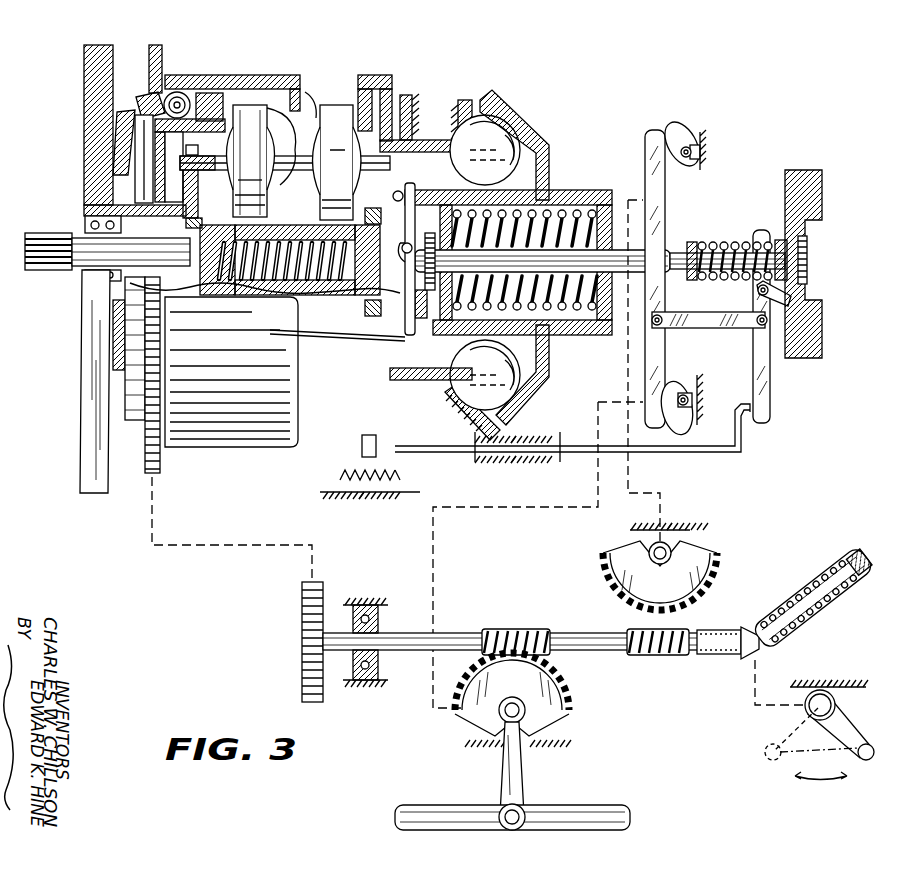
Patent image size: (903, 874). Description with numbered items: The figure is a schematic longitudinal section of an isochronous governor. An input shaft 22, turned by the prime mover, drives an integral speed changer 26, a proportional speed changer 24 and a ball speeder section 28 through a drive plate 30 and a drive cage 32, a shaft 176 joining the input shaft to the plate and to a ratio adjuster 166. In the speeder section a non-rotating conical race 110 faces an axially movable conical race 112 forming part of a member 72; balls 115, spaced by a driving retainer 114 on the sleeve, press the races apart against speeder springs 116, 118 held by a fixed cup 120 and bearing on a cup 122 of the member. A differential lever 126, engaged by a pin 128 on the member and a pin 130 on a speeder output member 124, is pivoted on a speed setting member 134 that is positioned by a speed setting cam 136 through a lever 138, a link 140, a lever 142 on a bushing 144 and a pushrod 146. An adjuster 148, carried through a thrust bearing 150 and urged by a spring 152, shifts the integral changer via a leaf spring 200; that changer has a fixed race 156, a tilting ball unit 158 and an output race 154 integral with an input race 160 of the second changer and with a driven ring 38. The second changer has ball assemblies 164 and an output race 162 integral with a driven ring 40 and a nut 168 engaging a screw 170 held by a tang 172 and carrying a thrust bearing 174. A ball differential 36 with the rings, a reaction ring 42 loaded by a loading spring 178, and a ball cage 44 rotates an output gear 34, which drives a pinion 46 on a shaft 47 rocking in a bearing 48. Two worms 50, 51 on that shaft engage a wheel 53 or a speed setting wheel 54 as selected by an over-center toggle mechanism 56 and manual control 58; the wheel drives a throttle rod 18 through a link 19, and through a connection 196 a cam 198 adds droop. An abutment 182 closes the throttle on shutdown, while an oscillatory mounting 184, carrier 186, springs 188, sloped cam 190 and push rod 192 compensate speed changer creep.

The throttle rod 18 is at (575, 806).
The link 19 is at (521, 774).
The input shaft 22 is at (40, 233).
The proportional speed changer 24 is at (251, 94).
The integral speed changer 26 is at (344, 94).
The ball speeder section 28 is at (498, 93).
The drive plate 30 is at (196, 204).
The drive cage 32 is at (295, 176).
The output gear 34 is at (158, 480).
The ball differential 36 is at (178, 75).
The driven ring 38 is at (153, 78).
The driven ring 40 is at (196, 105).
The reaction ring 42 is at (152, 98).
The ball cage 44 is at (138, 118).
The pinion 46 is at (318, 590).
The shaft 47 is at (399, 636).
The bearing 48 is at (371, 606).
The worm 50 is at (502, 630).
The worm 51 is at (651, 655).
The wheel 53 is at (571, 710).
The speed setting wheel 54 is at (718, 553).
The over-center toggle mechanism 56 is at (824, 620).
The manual control 58 is at (848, 724).
The member 72 is at (549, 168).
The conical race 110 is at (455, 140).
The conical race 112 is at (517, 116).
The driving retainer 114 is at (392, 152).
The balls 115 is at (485, 150).
The speeder spring 116 is at (552, 192).
The speeder spring 118 is at (556, 210).
The fixed cup 120 is at (590, 337).
The cup 122 is at (455, 360).
The speeder output member 124 is at (398, 372).
The differential lever 126 is at (420, 300).
The pin 128 is at (398, 190).
The pin 130 is at (380, 340).
The speed setting member 134 is at (665, 242).
The speed setting cam 136 is at (680, 121).
The lever 138 is at (753, 300).
The link 140 is at (682, 333).
The lever 142 is at (770, 379).
The bushing 144 is at (807, 283).
The pushrod 146 is at (735, 244).
The adjuster 148 is at (312, 228).
The thrust bearing 150 is at (376, 200).
The spring 152 is at (272, 276).
The output race 154 is at (316, 95).
The fixed race 156 is at (399, 95).
The ball unit 158 is at (337, 162).
The input race 160 is at (286, 120).
The output race 162 is at (251, 161).
The ball assemblies 164 is at (248, 168).
The ratio adjuster 166 is at (247, 284).
The nut 168 is at (150, 192).
The screw 170 is at (121, 226).
The tang 172 is at (90, 212).
The thrust bearing 174 is at (140, 244).
The shaft 176 is at (78, 290).
The loading spring 178 is at (122, 137).
The abutment 182 is at (431, 233).
The oscillatory mounting 184 is at (395, 440).
The carrier 186 is at (362, 442).
The springs 188 is at (340, 478).
The sloped cam 190 is at (392, 462).
The push rod 192 is at (704, 457).
The drive connection 196 is at (433, 572).
The cam 198 is at (682, 428).
The leaf spring 200 is at (245, 226).